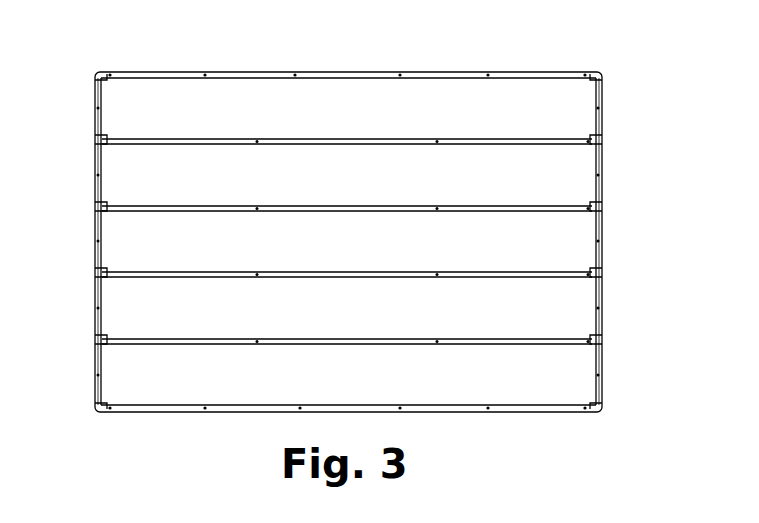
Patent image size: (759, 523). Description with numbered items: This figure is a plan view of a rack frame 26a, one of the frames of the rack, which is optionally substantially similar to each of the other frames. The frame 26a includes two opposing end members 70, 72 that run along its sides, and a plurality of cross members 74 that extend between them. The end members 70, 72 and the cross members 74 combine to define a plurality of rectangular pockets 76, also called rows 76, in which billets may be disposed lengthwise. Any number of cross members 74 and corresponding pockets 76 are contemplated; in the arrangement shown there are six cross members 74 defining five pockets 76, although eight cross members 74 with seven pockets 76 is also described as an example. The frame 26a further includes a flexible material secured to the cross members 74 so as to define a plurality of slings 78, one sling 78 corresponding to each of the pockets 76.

The frame 26a is at (622, 48).
The end member 70 is at (94, 268).
The end member 72 is at (602, 290).
The cross member 74 is at (175, 72).
The pocket 76 is at (573, 112).
The sling 78 is at (436, 240).